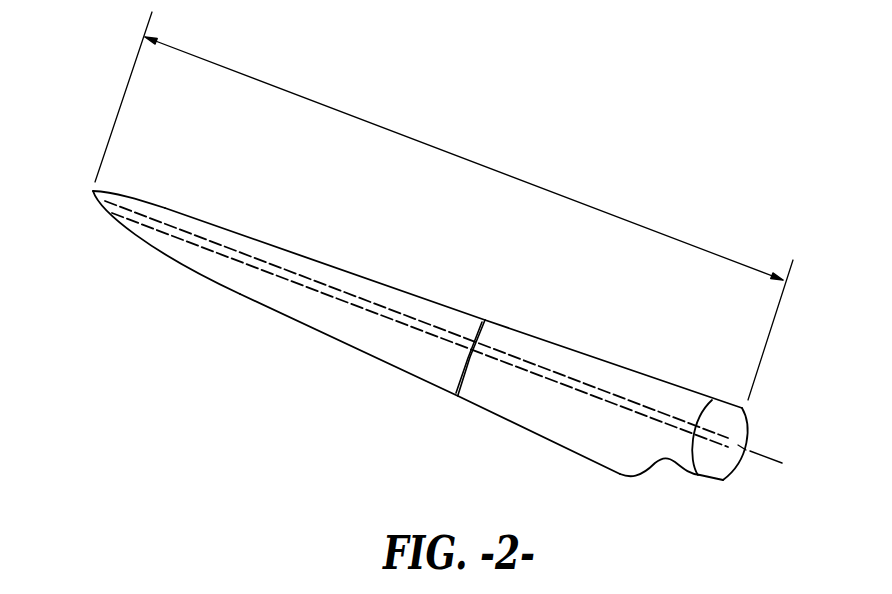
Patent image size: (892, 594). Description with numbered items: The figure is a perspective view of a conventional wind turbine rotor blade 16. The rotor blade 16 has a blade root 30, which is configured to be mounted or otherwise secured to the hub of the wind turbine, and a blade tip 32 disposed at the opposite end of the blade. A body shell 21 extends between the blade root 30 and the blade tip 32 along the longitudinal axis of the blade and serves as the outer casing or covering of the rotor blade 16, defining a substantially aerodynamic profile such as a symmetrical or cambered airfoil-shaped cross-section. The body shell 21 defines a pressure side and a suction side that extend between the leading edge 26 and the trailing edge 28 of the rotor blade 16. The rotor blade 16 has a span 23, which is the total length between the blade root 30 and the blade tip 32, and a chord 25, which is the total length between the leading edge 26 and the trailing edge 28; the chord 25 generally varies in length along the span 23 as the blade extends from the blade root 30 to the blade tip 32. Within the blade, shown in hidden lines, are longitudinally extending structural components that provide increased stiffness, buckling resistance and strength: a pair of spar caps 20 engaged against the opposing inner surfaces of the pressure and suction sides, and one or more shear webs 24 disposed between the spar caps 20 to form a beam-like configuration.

The rotor blade 16 is at (677, 157).
The spar caps 20 is at (397, 325).
The body shell 21 is at (300, 300).
The span 23 is at (375, 121).
The shear webs 24 is at (93, 193).
The chord 25 is at (468, 358).
The leading edge 26 is at (605, 362).
The trailing edge 28 is at (585, 458).
The blade root 30 is at (707, 460).
The blade tip 32 is at (93, 193).